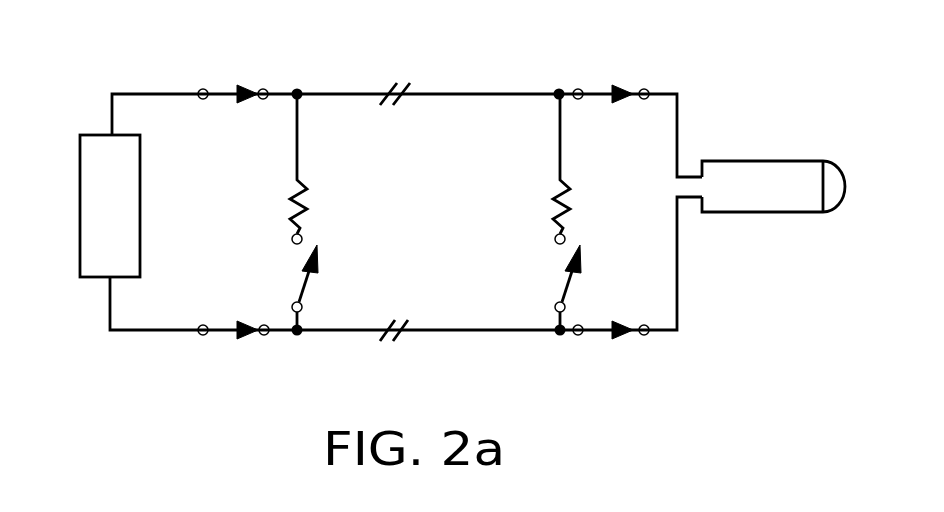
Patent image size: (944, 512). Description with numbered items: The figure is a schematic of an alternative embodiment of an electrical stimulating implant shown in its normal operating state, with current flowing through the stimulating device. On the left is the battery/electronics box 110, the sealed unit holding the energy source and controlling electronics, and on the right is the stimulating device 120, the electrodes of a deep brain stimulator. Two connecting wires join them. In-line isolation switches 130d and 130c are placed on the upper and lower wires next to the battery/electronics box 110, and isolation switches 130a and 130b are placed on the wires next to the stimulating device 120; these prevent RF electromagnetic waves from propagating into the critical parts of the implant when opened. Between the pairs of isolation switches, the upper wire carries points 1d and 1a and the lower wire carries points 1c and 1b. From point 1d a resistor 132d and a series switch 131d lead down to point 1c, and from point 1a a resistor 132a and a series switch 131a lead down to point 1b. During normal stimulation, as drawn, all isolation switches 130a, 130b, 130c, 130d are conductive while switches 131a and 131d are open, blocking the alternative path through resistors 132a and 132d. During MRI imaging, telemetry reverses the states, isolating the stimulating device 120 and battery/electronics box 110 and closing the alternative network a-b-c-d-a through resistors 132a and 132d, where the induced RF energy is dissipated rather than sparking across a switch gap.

The battery/electronics box 110 is at (87, 134).
The stimulating device 120 is at (847, 117).
The isolation switch 130a is at (660, 50).
The isolation switch 130b is at (667, 370).
The isolation switch 130c is at (253, 338).
The isolation switch 130d is at (258, 92).
The switch 131a is at (572, 273).
The switch 131d is at (312, 274).
The resistor 132a is at (553, 223).
The resistor 132d is at (292, 223).
The point 1a is at (558, 86).
The point 1b is at (560, 340).
The point 1c is at (297, 340).
The point 1d is at (297, 92).